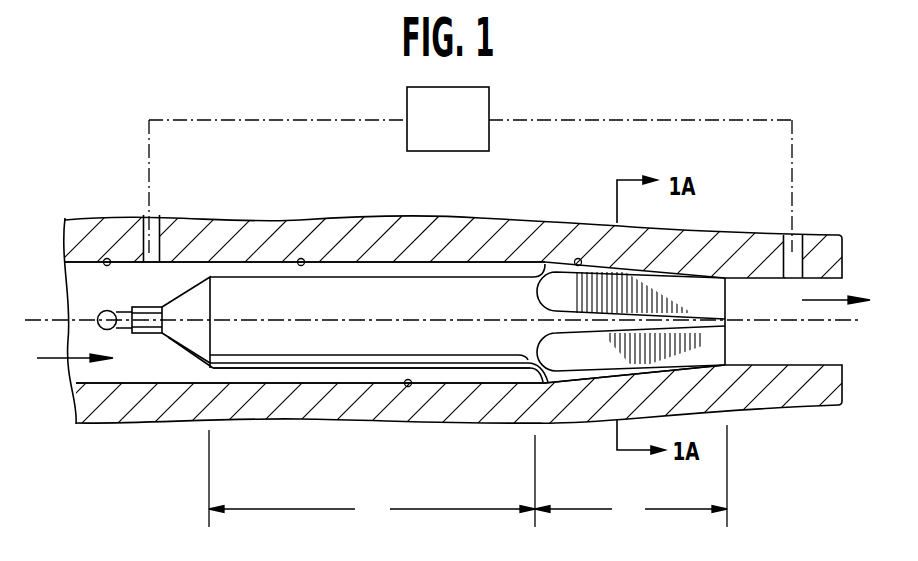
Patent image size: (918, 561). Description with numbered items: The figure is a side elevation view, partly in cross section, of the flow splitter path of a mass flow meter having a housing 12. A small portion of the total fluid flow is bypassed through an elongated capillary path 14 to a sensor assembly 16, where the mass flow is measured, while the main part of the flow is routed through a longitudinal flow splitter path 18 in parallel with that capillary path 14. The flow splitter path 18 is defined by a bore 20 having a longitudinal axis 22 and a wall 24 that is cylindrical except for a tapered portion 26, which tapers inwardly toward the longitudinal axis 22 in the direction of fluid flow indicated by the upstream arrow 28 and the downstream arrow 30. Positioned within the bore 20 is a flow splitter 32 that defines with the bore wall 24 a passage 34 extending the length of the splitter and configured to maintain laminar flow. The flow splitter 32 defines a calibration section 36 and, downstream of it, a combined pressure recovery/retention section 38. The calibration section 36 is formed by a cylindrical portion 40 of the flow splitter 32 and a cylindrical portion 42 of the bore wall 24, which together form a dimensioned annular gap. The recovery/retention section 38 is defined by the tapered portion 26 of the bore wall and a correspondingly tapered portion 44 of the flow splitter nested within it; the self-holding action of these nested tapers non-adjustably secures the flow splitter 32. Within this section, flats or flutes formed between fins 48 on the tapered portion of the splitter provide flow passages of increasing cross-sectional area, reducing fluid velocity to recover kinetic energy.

The housing 12 is at (187, 220).
The elongated capillary path 14 is at (297, 118).
The sensor assembly 16 is at (489, 103).
The longitudinal flow splitter path 18 is at (165, 372).
The bore 20 is at (105, 258).
The longitudinal axis 22 is at (40, 320).
The bore wall 24 is at (300, 258).
The tapered portion 26 is at (578, 258).
The upstream arrow 28 is at (48, 362).
The downstream arrow 30 is at (820, 300).
The flow splitter 32 is at (488, 288).
The passage 34 is at (383, 268).
The calibration section 36 is at (372, 478).
The combined pressure recovery/retention section 38 is at (631, 476).
The cylindrical portion of the flow splitter 40 is at (267, 370).
The cylindrical portion of the bore wall 42 is at (410, 387).
The tapered portion of the flow splitter 44 is at (585, 383).
The fins 48 is at (693, 302).